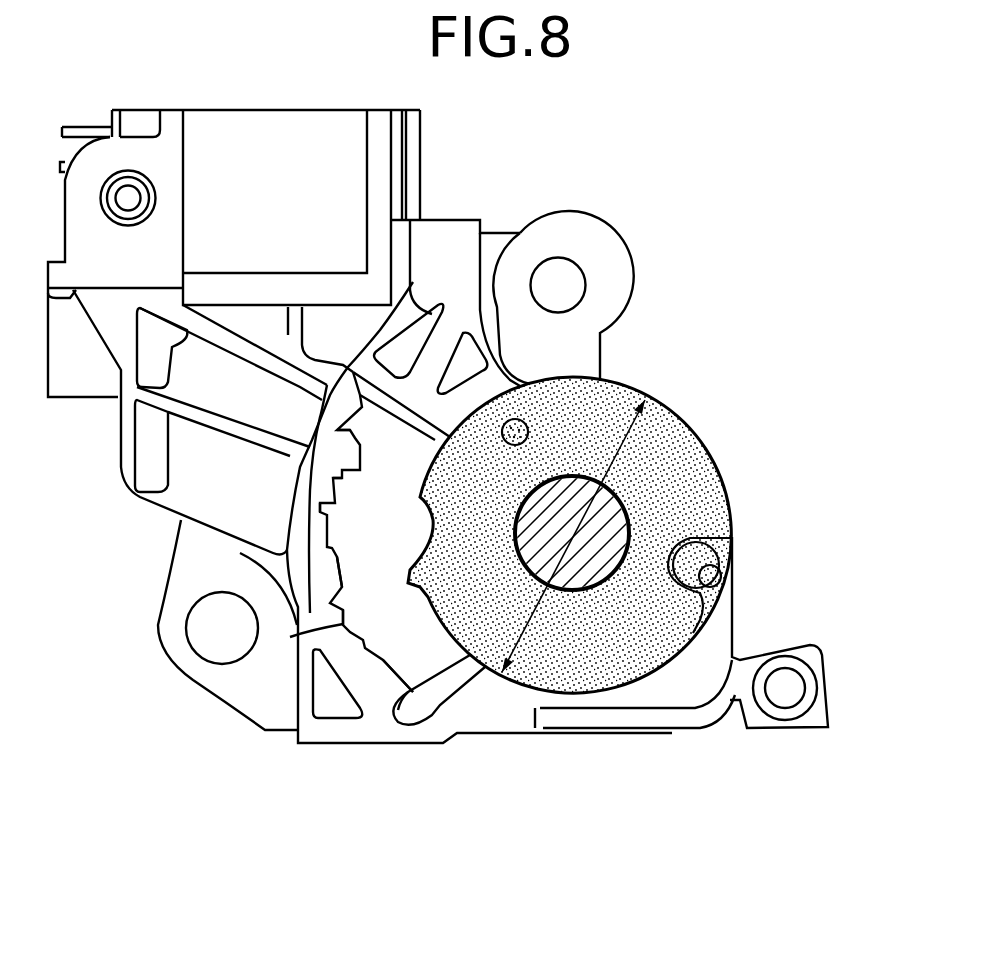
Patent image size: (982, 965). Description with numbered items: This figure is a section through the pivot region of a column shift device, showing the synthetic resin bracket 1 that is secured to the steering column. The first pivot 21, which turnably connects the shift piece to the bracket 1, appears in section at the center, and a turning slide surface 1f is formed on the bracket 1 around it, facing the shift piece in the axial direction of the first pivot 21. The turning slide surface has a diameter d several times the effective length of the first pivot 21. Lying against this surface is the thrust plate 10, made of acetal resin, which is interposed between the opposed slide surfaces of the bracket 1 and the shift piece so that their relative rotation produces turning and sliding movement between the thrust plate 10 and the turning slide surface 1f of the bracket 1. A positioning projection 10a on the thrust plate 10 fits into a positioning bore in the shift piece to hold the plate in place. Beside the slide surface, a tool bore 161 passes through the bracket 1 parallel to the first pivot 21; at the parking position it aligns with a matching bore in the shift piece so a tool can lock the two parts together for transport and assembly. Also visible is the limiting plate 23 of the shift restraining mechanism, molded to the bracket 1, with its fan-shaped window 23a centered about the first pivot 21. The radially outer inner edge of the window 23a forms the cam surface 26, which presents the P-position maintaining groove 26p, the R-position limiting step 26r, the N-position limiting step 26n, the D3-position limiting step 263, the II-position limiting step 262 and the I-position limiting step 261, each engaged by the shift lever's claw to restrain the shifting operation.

The bracket 1 is at (603, 274).
The thrust plate 10 is at (700, 490).
The positioning projection 10a is at (524, 422).
The turning slide surface 1f is at (732, 542).
The tool bore 161 is at (707, 578).
The first pivot 21 is at (594, 575).
The diameter of the turning slide surfaces d is at (612, 443).
The cam surface 26 is at (347, 570).
The P-position maintaining groove 26p is at (354, 406).
The R-position limiting step 26r is at (337, 487).
The N-position limiting step 26n is at (320, 513).
The I-position limiting step 261 is at (393, 608).
The II-position limiting step 262 is at (395, 588).
The D3-position limiting step 263 is at (353, 578).
The limiting plate 23 is at (423, 700).
The window 23a is at (420, 680).